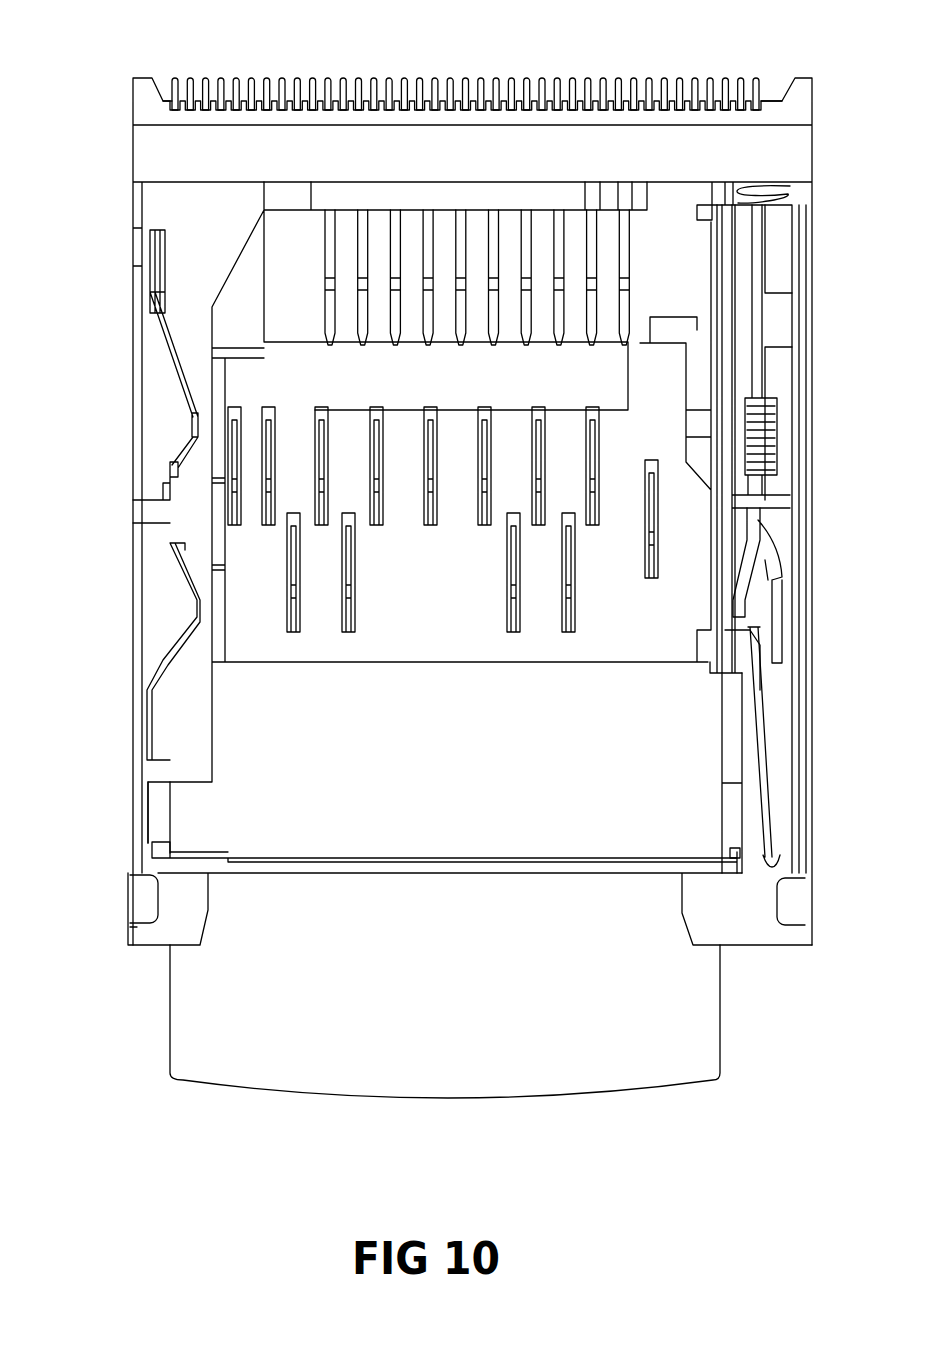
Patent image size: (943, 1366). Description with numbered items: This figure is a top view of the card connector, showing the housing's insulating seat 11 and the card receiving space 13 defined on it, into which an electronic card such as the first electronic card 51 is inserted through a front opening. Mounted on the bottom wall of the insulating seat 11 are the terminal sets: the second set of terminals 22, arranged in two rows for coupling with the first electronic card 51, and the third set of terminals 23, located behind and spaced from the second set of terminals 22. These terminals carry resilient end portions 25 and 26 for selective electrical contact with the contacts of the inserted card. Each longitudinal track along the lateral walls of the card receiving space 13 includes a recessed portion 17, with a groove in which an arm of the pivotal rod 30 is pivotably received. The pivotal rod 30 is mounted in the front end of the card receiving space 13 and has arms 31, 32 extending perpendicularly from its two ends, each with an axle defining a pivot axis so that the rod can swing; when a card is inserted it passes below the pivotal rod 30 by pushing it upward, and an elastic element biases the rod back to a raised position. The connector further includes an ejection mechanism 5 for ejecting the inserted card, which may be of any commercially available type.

The insulating seat 11 is at (290, 160).
The third set of terminals 23 is at (328, 232).
The resilient end portion 26 is at (328, 307).
The resilient end portion 25 is at (238, 443).
The second set of terminals 22 is at (236, 503).
The card receiving space 13 is at (697, 590).
The ejection mechanism 5 is at (770, 600).
The recessed portion 17 is at (740, 778).
The arm 32 is at (158, 853).
The pivotal rod 30 is at (570, 870).
The arm 31 is at (735, 855).
The first electronic card 51 is at (692, 1025).